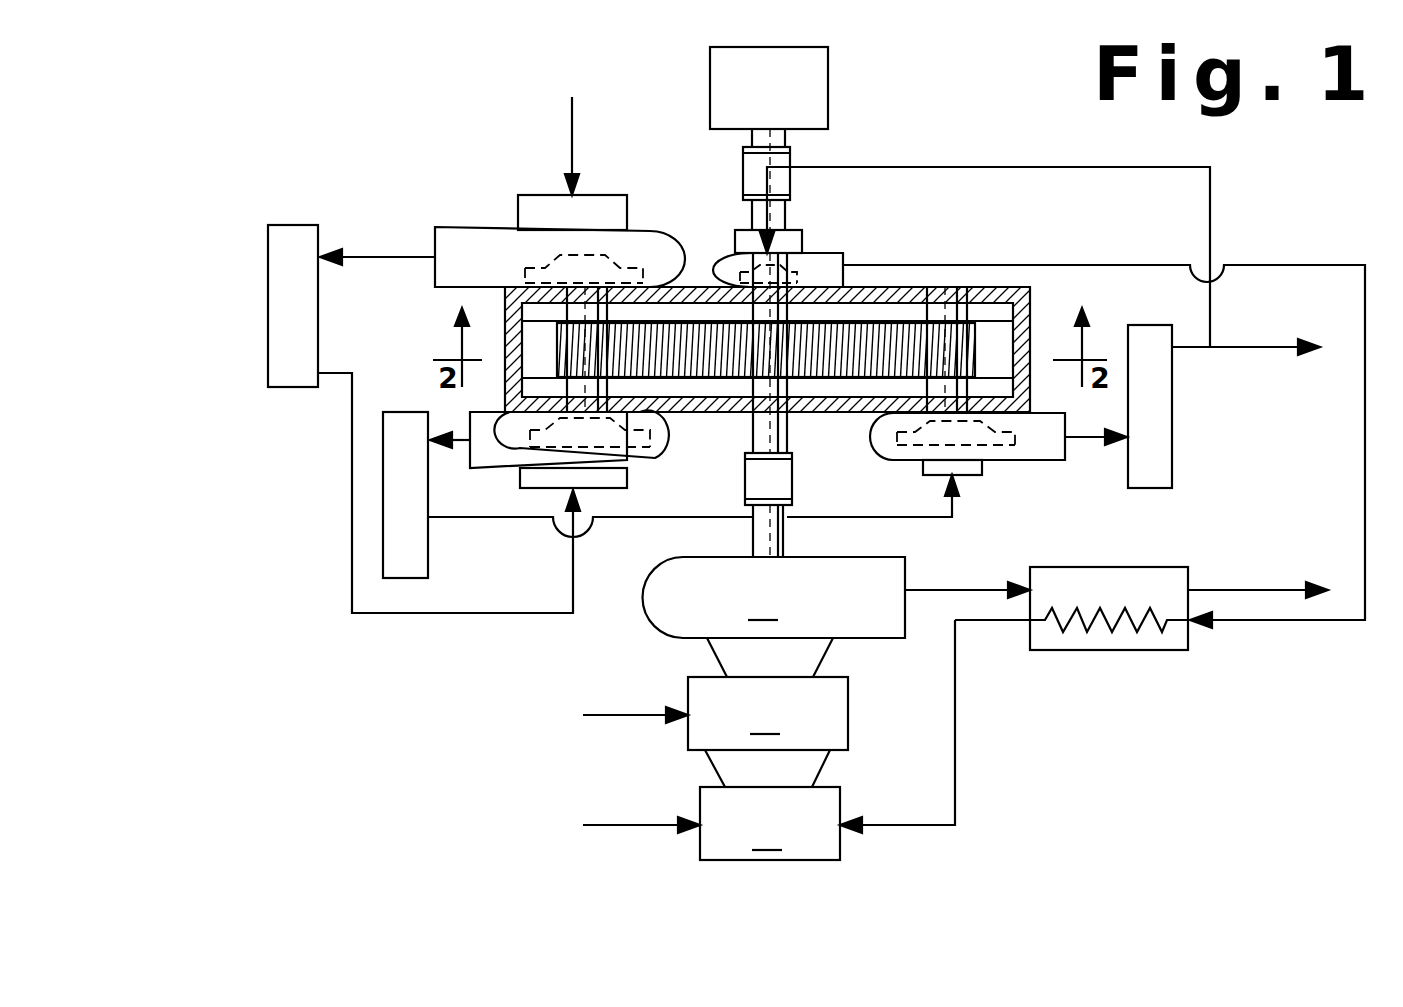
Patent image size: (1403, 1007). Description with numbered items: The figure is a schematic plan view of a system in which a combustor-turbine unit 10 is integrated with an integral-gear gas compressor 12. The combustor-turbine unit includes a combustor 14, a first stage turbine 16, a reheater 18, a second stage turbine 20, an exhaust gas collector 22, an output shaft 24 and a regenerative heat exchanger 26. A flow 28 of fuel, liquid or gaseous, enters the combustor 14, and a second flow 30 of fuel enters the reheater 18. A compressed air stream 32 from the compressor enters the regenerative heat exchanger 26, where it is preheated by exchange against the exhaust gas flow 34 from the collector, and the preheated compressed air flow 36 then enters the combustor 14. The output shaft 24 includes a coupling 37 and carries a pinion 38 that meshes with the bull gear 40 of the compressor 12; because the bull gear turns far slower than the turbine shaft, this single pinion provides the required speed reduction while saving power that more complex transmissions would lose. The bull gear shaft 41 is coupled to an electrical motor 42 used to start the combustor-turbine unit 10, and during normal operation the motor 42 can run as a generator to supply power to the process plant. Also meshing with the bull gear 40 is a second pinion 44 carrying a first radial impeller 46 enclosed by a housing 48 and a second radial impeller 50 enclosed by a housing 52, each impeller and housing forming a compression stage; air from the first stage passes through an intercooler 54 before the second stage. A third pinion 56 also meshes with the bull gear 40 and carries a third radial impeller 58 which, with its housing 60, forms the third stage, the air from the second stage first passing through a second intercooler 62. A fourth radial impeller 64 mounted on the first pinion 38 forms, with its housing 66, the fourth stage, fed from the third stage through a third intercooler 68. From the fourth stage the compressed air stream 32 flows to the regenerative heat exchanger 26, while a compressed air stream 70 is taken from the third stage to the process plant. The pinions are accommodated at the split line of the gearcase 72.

The combustor-turbine unit 10 is at (596, 677).
The integral-gear gas compressor 12 is at (1032, 259).
The combustor 14 is at (770, 823).
The first stage turbine 16 is at (807, 768).
The reheater 18 is at (768, 713).
The second stage turbine 20 is at (815, 657).
The exhaust gas collector 22 is at (774, 597).
The output shaft 24 is at (760, 533).
The regenerative heat exchanger 26 is at (1118, 652).
The flow of fuel 28 is at (638, 827).
The second flow of fuel 30 is at (635, 717).
The compressed air stream 32 is at (1267, 622).
The exhaust gas flow 34 is at (979, 590).
The preheated compressed air flow 36 is at (957, 793).
The coupling 37 is at (777, 485).
The pinion 38 is at (787, 382).
The bull gear 40 is at (878, 325).
The bull gear shaft 41 is at (848, 310).
The electrical motor 42 is at (820, 106).
The second pinion 44 is at (565, 335).
The first radial impeller 46 is at (543, 263).
The housing 48 is at (455, 228).
The second radial impeller 50 is at (657, 428).
The housing 52 is at (653, 460).
The intercooler 54 is at (282, 312).
The third pinion 56 is at (980, 347).
The third radial impeller 58 is at (990, 447).
The housing 60 is at (1037, 462).
The second intercooler 62 is at (418, 540).
The fourth radial impeller 64 is at (757, 268).
The housing 66 is at (713, 265).
The third intercooler 68 is at (1167, 408).
The compressed air stream 70 is at (1215, 345).
The gearcase 72 is at (910, 292).